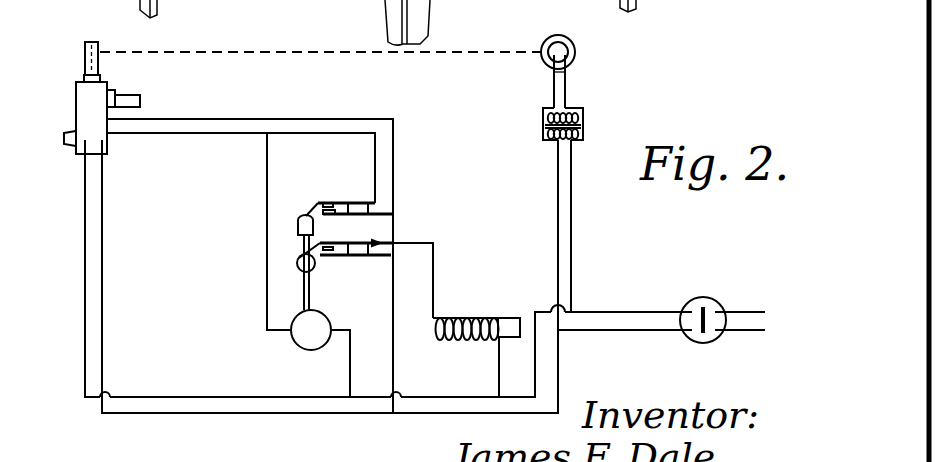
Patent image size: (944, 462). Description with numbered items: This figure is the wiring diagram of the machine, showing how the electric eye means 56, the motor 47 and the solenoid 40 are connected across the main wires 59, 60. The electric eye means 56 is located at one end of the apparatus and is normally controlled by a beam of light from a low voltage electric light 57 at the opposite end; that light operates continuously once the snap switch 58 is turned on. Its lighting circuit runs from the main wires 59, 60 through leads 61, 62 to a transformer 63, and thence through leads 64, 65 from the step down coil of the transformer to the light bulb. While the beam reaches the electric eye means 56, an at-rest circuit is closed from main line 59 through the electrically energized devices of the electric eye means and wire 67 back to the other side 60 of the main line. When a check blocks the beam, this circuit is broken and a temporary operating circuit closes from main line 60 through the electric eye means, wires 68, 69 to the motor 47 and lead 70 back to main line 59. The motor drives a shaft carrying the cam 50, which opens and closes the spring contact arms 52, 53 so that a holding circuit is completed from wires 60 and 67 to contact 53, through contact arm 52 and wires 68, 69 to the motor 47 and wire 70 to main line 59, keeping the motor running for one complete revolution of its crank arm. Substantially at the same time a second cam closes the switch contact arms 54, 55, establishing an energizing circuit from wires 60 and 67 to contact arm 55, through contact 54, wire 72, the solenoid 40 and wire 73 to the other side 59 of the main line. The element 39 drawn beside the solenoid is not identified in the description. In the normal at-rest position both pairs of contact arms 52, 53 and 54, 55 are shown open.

The resistor 39 is at (509, 318).
The solenoid 40 is at (468, 318).
The motor 47 is at (304, 341).
The cam 50 is at (297, 222).
The contact arm 52 is at (327, 194).
The contact 53 is at (356, 222).
The switch contact arm 54 is at (354, 243).
The switch contact arm 55 is at (357, 257).
The electric eye means 56 is at (82, 99).
The low voltage electric light 57 is at (568, 43).
The snap switch 58 is at (706, 298).
The main wire 59 is at (84, 203).
The main wire 60 is at (104, 203).
The lead 61 is at (572, 193).
The lead 62 is at (557, 170).
The transformer 63 is at (588, 127).
The lead 64 is at (567, 83).
The lead 65 is at (553, 88).
The wire 67 is at (190, 118).
The wire 68 is at (206, 135).
The wire 69 is at (265, 279).
The lead 70 is at (349, 370).
The wire 72 is at (435, 253).
The wire 73 is at (496, 370).